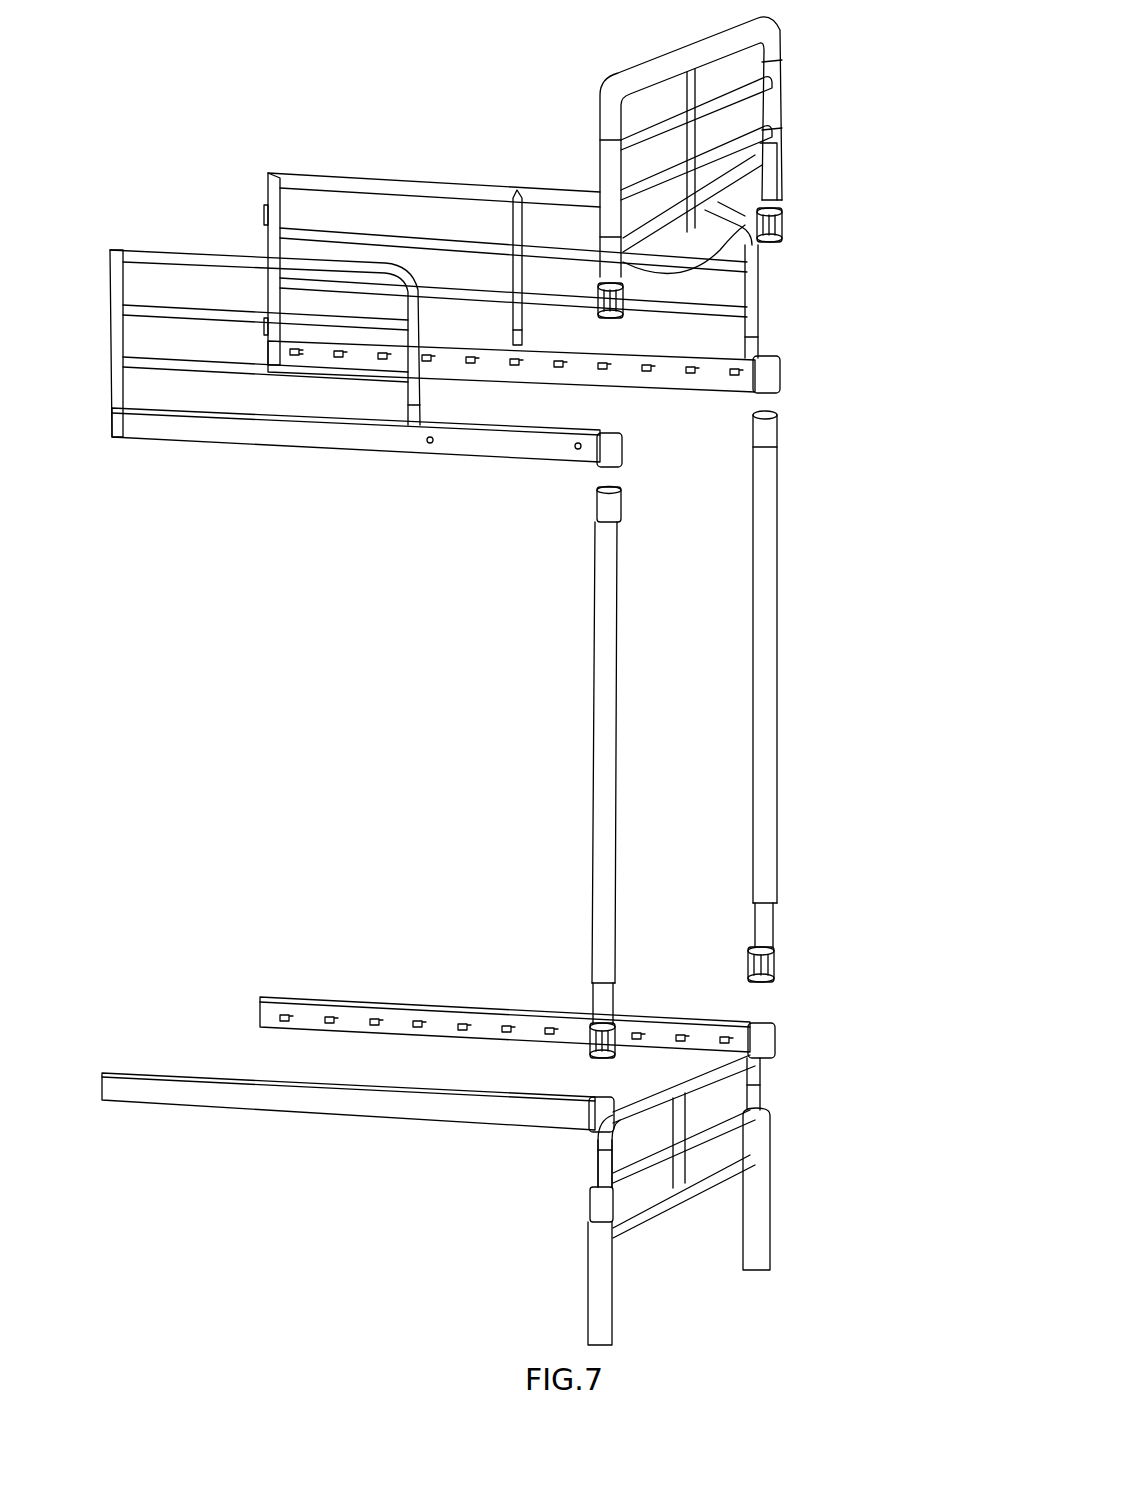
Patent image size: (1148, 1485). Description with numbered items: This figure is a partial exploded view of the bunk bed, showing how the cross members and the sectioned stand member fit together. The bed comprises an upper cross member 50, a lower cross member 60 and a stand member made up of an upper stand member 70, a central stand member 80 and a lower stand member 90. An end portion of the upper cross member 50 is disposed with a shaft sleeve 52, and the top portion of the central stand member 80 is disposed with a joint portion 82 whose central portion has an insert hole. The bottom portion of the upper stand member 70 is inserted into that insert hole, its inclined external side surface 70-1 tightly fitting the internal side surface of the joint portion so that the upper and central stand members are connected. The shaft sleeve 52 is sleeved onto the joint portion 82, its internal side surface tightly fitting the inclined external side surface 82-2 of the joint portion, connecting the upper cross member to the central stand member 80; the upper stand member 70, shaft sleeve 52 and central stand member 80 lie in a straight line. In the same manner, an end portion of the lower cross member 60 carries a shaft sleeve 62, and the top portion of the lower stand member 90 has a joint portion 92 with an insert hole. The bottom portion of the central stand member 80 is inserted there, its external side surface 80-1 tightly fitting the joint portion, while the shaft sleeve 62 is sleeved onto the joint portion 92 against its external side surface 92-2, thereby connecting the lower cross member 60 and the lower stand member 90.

The upper cross member 50 is at (390, 436).
The shaft sleeve 52 is at (613, 447).
The lower cross member 60 is at (408, 1108).
The shaft sleeve 62 is at (612, 1117).
The upper stand member 70 is at (617, 190).
The external side surface 70-1 is at (782, 228).
The central stand member 80 is at (610, 752).
The external side surface 80-1 is at (600, 1002).
The joint portion 82 is at (615, 505).
The external side surface 82-2 is at (600, 512).
The lower stand member 90 is at (605, 1303).
The joint portion 92 is at (607, 1198).
The external side surface 92-2 is at (595, 1207).